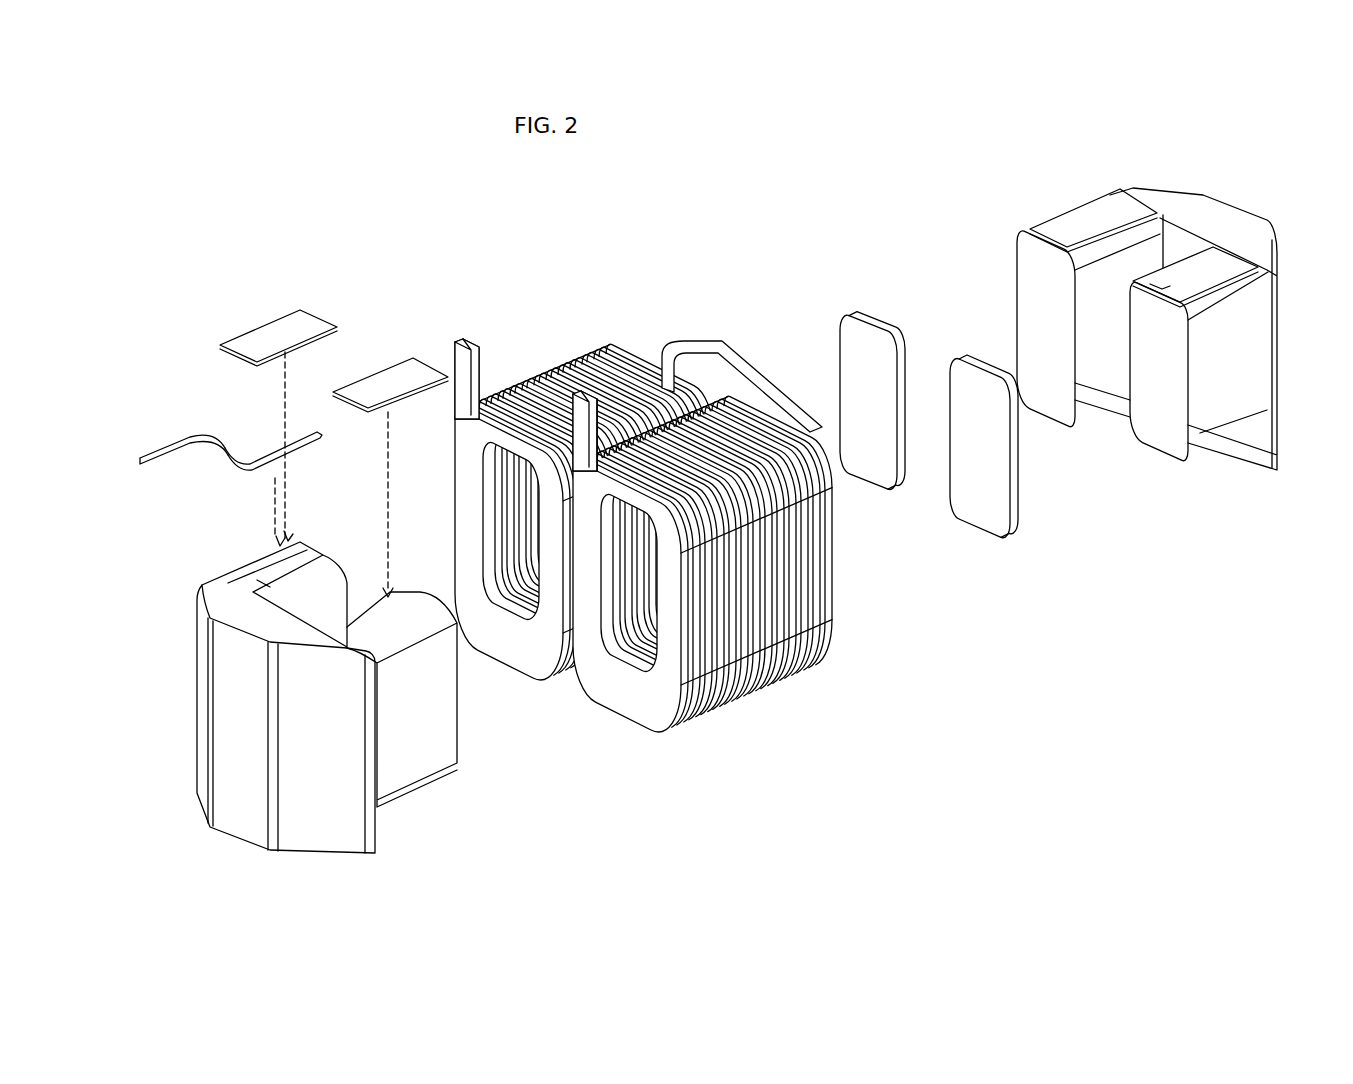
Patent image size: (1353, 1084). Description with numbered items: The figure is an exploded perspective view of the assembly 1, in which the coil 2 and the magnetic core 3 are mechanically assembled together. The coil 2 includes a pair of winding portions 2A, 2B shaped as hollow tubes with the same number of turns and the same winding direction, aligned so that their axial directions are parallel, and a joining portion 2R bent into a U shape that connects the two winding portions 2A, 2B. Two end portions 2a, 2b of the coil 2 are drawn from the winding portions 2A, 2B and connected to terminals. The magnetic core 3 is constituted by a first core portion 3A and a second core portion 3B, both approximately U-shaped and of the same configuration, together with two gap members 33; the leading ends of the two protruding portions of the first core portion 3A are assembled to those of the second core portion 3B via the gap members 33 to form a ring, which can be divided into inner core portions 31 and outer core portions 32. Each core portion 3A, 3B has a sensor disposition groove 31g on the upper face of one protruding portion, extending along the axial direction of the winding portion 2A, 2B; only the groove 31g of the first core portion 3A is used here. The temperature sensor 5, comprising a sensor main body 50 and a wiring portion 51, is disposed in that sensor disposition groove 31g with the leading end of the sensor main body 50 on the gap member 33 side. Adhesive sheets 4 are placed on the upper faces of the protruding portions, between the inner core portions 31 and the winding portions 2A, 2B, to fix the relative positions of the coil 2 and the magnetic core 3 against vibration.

The assembly 1 is at (413, 200).
The coil 2 is at (678, 500).
The winding portion 2A is at (622, 362).
The winding portion 2B is at (833, 606).
The joining portion 2R is at (722, 342).
The end portion 2a is at (453, 350).
The end portion 2b is at (572, 392).
The magnetic core 3 is at (716, 502).
The first core portion 3A is at (446, 779).
The second core portion 3B is at (1218, 470).
The inner core portion 31 is at (240, 548).
The sensor disposition groove 31g is at (307, 548).
The outer core portion 32 is at (202, 622).
The gap member 33 is at (846, 322).
The adhesive sheet 4 is at (263, 330).
The temperature sensor 5 is at (263, 474).
The sensor main body 50 is at (267, 450).
The wiring portion 51 is at (170, 447).